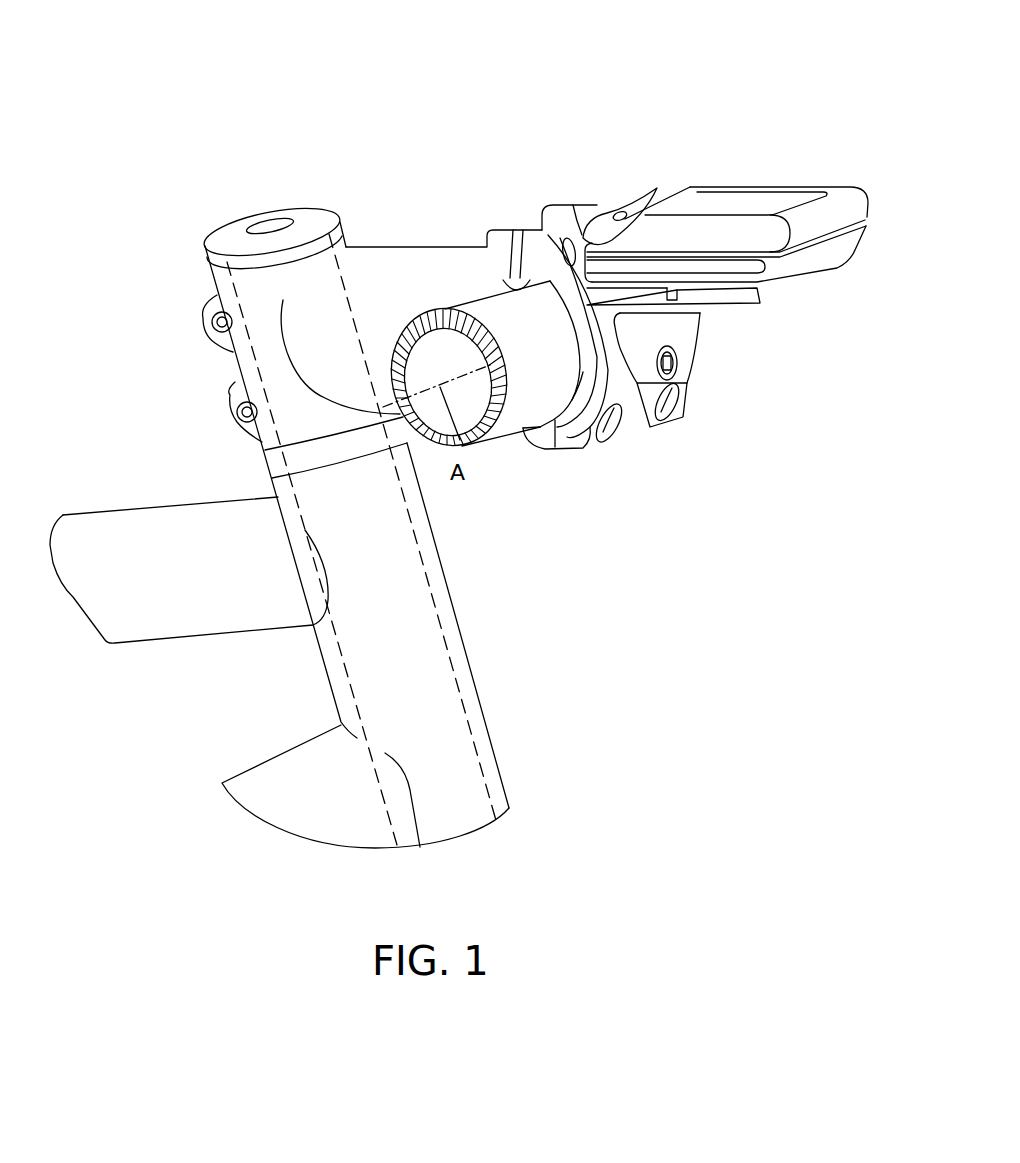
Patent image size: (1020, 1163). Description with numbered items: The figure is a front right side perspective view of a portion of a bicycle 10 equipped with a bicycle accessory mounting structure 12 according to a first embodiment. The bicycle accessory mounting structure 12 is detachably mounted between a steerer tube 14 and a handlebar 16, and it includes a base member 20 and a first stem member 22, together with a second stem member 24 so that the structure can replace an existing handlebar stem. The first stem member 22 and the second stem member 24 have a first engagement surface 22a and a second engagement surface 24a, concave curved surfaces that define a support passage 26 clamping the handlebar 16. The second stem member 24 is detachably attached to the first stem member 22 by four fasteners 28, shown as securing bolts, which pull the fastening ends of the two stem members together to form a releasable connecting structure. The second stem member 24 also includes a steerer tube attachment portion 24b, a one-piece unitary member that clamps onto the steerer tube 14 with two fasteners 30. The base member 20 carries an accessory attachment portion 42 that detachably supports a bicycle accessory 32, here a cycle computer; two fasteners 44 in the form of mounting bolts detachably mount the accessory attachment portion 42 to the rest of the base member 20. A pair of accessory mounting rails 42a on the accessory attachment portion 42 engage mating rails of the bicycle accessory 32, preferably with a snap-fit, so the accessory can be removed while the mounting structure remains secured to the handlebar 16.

The bicycle 10 is at (520, 685).
The bicycle accessory mounting structure 12 is at (556, 68).
The steerer tube 14 is at (445, 622).
The handlebar 16 is at (446, 302).
The base member 20 is at (702, 357).
The first stem member 22 is at (601, 194).
The first engagement surface 22a is at (560, 305).
The second stem member 24 is at (425, 240).
The second engagement surface 24a is at (515, 278).
The steerer tube attachment portion 24b is at (232, 365).
The support passage 26 is at (568, 382).
The fasteners 28 is at (580, 250).
The fasteners 30 is at (206, 330).
The bicycle accessory 32 is at (803, 180).
The accessory attachment portion 42 is at (682, 334).
The accessory mounting rails 42a is at (722, 304).
The fasteners 44 is at (677, 366).